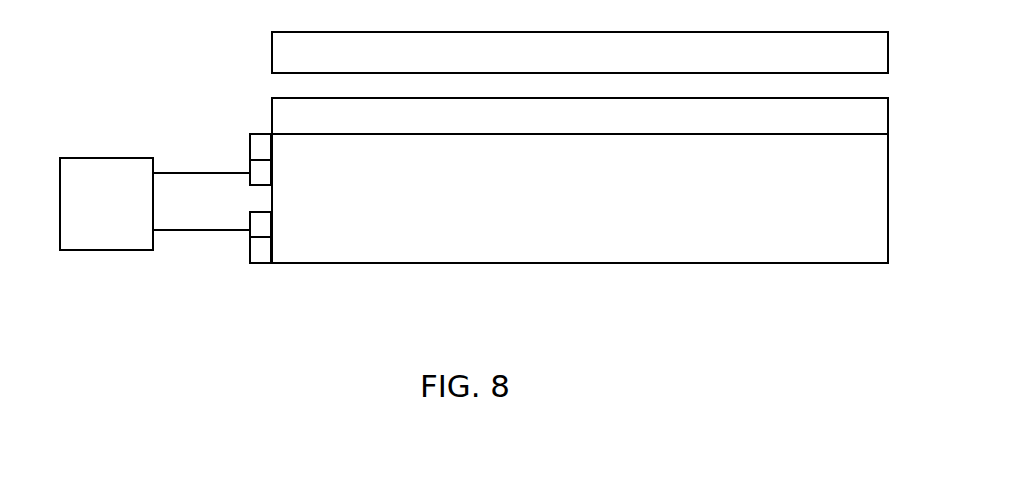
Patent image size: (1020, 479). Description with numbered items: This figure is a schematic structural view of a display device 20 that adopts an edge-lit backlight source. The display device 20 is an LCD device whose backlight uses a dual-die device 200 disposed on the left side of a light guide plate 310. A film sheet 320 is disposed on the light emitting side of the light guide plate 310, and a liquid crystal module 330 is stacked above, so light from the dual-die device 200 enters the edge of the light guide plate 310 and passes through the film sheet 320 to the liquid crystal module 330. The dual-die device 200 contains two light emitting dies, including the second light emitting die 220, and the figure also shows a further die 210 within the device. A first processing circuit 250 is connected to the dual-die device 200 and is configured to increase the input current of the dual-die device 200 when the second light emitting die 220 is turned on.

The display device 20 is at (618, 206).
The dual-die device 200 is at (219, 197).
The second driving unit 210 is at (219, 186).
The second light emitting die 220 is at (219, 120).
The first processing circuit 250 is at (155, 204).
The light guide plate 310 is at (618, 198).
The film sheet 320 is at (618, 116).
The liquid crystal module 330 is at (618, 52).